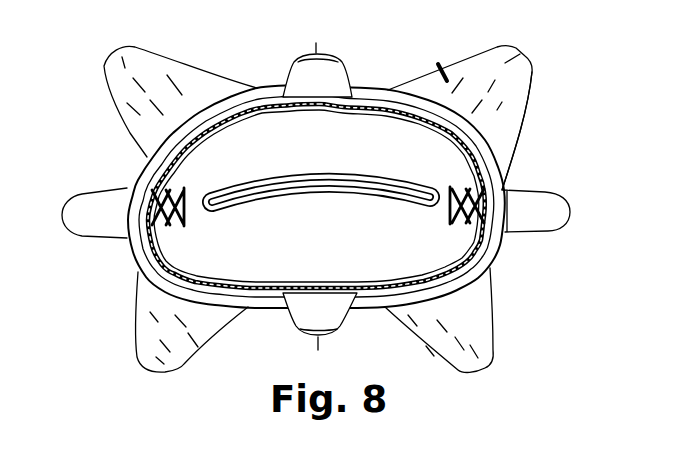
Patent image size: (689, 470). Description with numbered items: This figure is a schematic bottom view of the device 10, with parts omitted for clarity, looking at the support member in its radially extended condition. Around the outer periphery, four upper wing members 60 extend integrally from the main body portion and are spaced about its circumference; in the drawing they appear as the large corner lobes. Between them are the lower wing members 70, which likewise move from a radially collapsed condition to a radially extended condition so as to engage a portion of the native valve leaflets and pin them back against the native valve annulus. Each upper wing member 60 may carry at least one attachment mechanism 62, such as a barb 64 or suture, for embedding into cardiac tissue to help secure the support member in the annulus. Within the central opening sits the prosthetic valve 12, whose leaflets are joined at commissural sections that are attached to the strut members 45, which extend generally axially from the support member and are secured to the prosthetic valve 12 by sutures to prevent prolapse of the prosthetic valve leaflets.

The eye mask 10 is at (315, 180).
The prosthetic valve 12 is at (327, 237).
The strut members 45 is at (181, 181).
The upper wing members 60 is at (143, 56).
The attachment mechanism 62 is at (438, 64).
The barb 64 is at (496, 110).
The lower wing members 70 is at (328, 75).